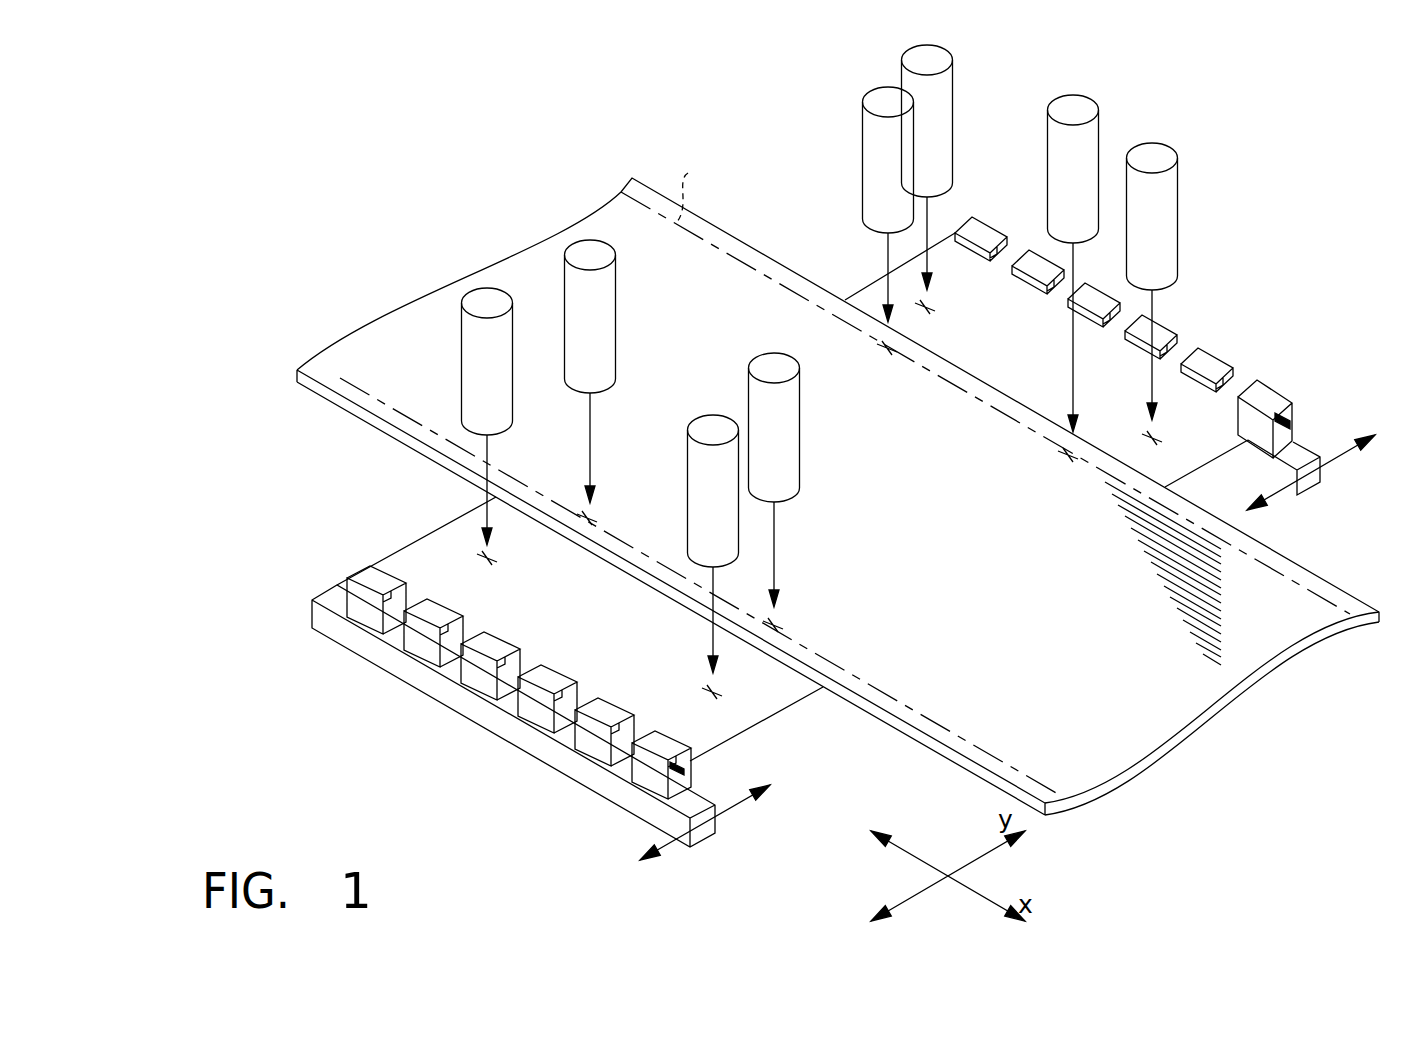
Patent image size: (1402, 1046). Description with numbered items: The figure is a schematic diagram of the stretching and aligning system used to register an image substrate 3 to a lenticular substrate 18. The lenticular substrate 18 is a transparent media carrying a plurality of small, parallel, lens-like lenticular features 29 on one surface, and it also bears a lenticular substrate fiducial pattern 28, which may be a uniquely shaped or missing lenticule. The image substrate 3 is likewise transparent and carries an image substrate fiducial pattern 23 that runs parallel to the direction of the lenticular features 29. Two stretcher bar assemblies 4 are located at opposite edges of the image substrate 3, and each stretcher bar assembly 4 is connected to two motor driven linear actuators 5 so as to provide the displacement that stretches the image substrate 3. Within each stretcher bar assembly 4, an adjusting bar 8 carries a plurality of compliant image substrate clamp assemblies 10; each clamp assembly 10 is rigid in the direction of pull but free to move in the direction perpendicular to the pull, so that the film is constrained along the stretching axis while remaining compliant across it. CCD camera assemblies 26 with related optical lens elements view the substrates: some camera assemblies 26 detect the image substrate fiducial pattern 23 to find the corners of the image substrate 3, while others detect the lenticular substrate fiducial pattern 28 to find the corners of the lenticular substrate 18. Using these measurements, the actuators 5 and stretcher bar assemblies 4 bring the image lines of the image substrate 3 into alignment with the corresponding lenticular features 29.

The image substrate 3 is at (790, 703).
The stretcher bar assembly 4 is at (811, 532).
The motor driven linear actuator 5 is at (735, 808).
The adjusting bar 8 is at (578, 778).
The compliant image substrate clamp assembly 10 is at (362, 577).
The lenticular substrate 18 is at (1103, 790).
The image substrate fiducial pattern 23 is at (488, 567).
The CCD camera assembly 26 is at (462, 333).
The lenticular substrate fiducial pattern 28 is at (940, 722).
The lenticular features 29 is at (1139, 557).